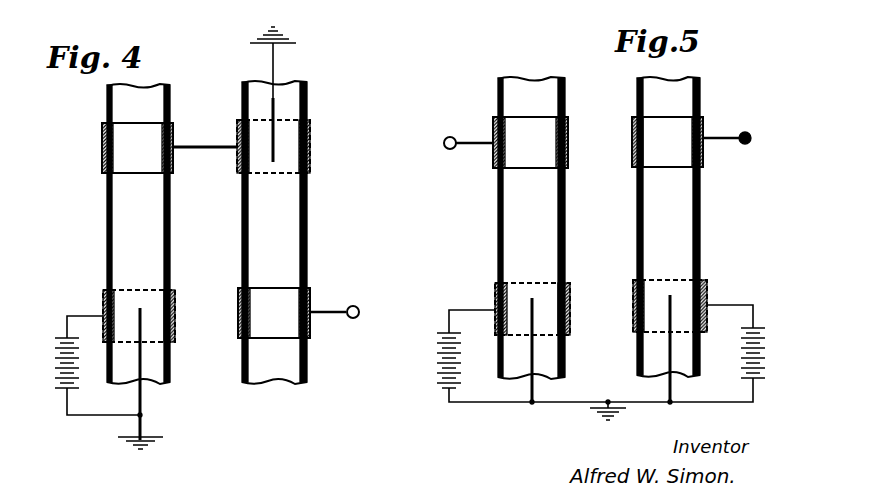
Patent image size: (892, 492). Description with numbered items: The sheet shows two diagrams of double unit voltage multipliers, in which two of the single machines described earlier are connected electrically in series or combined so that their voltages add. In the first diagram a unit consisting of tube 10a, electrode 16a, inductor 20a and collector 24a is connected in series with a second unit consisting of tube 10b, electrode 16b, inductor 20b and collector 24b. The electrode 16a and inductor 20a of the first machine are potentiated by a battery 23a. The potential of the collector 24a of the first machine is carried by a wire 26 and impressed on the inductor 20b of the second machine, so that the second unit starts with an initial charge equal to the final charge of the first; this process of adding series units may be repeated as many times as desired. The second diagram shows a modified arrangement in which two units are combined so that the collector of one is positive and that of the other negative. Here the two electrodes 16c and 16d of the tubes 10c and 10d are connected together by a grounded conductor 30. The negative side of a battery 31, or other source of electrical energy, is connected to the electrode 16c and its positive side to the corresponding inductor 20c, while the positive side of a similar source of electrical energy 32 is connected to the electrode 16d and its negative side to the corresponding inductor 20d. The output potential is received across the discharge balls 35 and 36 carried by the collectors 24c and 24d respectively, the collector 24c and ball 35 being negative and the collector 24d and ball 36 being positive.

In FIG. 4, the tube 10a is at (107, 220).
In FIG. 4, the tube 10b is at (308, 200).
In FIG. 5, the tube 10c is at (498, 218).
In FIG. 5, the tube 10d is at (702, 205).
In FIG. 4, the electrode 16a is at (139, 318).
In FIG. 4, the electrode 16b is at (280, 116).
In FIG. 5, the electrode 16c is at (530, 309).
In FIG. 5, the electrode 16d is at (674, 296).
In FIG. 4, the inductor 20a is at (176, 312).
In FIG. 4, the inductor 20b is at (312, 142).
In FIG. 5, the inductor 20c is at (495, 295).
In FIG. 5, the inductor 20d is at (708, 292).
In FIG. 4, the collector 24a is at (112, 176).
In FIG. 4, the collector 24b is at (255, 298).
In FIG. 5, the collector 24c is at (498, 117).
In FIG. 5, the collector 24d is at (682, 118).
In FIG. 4, the battery 23a is at (53, 391).
In FIG. 4, the wire 26 is at (205, 147).
In FIG. 5, the grounded conductor 30 is at (591, 401).
In FIG. 5, the battery 31 is at (434, 367).
In FIG. 5, the source of electrical energy 32 is at (768, 375).
In FIG. 5, the discharge ball 35 is at (454, 137).
In FIG. 5, the discharge ball 36 is at (749, 133).